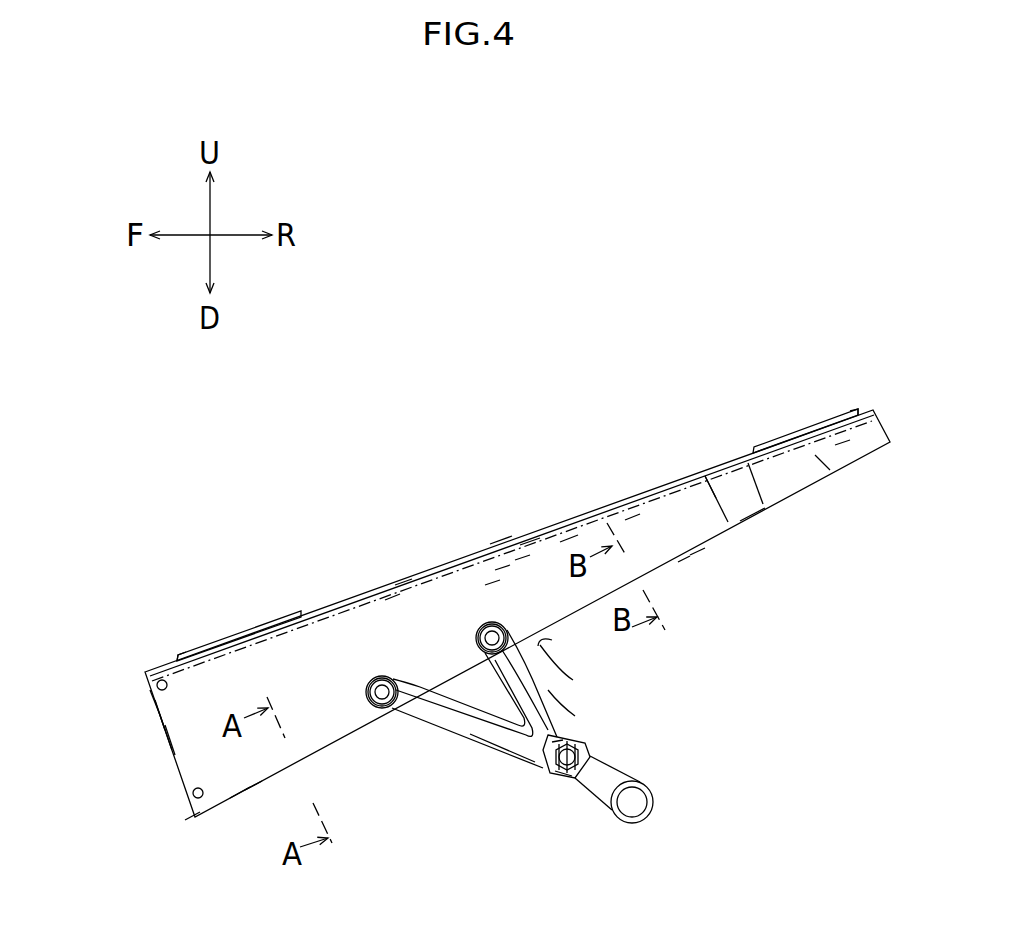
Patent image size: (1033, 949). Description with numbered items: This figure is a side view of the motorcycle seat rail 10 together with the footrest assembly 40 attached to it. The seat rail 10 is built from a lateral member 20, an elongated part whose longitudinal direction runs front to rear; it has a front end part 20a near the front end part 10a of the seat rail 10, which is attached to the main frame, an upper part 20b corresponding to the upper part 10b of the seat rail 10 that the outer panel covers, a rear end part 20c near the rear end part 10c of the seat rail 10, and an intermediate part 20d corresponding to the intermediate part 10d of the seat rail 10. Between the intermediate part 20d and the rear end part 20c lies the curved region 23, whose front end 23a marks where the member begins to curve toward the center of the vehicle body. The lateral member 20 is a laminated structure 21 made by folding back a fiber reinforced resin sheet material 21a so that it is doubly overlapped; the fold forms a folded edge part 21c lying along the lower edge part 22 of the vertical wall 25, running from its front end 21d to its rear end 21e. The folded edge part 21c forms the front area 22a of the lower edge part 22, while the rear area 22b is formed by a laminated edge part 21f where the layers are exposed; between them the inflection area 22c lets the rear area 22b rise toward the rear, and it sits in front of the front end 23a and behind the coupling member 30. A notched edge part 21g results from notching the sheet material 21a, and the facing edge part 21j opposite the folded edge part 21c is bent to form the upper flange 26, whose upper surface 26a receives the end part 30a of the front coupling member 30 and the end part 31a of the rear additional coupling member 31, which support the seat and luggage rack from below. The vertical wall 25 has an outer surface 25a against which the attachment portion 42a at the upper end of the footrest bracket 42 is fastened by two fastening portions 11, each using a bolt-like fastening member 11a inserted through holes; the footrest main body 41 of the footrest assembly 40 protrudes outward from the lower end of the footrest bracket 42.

The seat rail 10 is at (597, 500).
The front end part 10a is at (172, 740).
The upper part 10b is at (531, 552).
The rear end part 10c is at (823, 463).
The intermediate part 10d is at (502, 573).
The fastening portion 11 is at (380, 695).
The fastening member 11a is at (383, 707).
The lateral member 20 is at (655, 540).
The front end part 20a is at (162, 727).
The upper part 20b is at (520, 563).
The rear end part 20c is at (838, 448).
The intermediate part 20d is at (493, 582).
The laminated structure 21 is at (173, 733).
The sheet material 21a is at (153, 700).
The folded edge part 21c is at (237, 798).
The front end 21d is at (193, 815).
The rear end 21e is at (540, 645).
The laminated edge part 21f is at (693, 555).
The notched edge part 21g is at (683, 560).
The facing edge part 21j is at (405, 583).
The lower edge part 22 is at (395, 713).
The front area 22a is at (252, 788).
The rear area 22b is at (747, 523).
The inflection area 22c is at (538, 646).
The curved region 23 is at (735, 478).
The front end 23a is at (705, 474).
The vertical wall 25 is at (633, 520).
The outer surface 25a is at (570, 547).
The upper flange 26 is at (500, 540).
The upper surface 26a is at (393, 600).
The coupling member 30 is at (228, 637).
The end part 30a is at (204, 650).
The additional coupling member 31 is at (812, 456).
The end part 31a is at (855, 414).
The footrest assembly 40 is at (553, 755).
The footrest main body 41 is at (575, 766).
The footrest bracket 42 is at (472, 728).
The attachment portion 42a is at (563, 693).